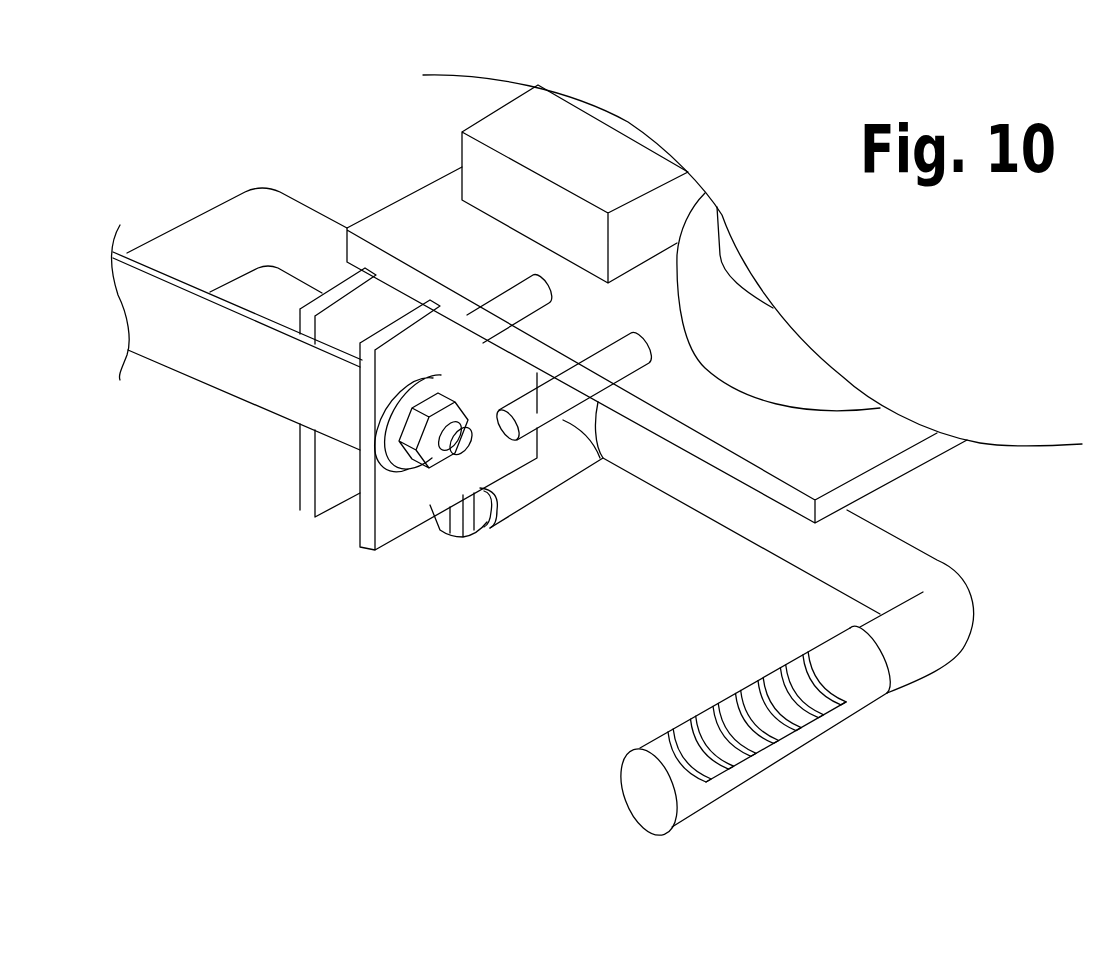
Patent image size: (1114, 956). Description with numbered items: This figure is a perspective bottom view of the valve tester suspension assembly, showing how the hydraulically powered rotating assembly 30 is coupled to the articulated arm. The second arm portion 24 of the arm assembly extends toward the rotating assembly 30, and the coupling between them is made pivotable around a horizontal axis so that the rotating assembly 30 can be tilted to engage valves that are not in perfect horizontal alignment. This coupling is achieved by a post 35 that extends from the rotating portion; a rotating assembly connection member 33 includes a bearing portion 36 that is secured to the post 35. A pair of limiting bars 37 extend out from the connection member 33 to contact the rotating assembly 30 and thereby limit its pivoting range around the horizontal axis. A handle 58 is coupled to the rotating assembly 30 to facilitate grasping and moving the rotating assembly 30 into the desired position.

The second arm portion 24 is at (247, 365).
The hydraulically powered rotating assembly 30 is at (737, 263).
The rotating assembly connection member 33 is at (395, 508).
The post 35 is at (457, 537).
The bearing portion 36 is at (553, 463).
The limiting bars 37 is at (508, 307).
The handles 58 is at (703, 716).